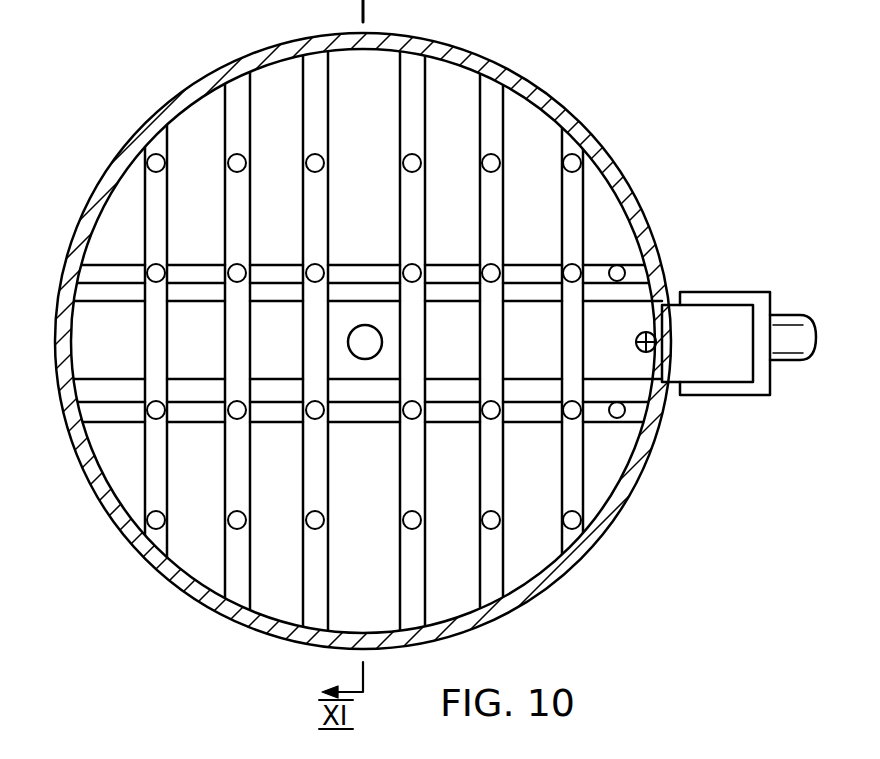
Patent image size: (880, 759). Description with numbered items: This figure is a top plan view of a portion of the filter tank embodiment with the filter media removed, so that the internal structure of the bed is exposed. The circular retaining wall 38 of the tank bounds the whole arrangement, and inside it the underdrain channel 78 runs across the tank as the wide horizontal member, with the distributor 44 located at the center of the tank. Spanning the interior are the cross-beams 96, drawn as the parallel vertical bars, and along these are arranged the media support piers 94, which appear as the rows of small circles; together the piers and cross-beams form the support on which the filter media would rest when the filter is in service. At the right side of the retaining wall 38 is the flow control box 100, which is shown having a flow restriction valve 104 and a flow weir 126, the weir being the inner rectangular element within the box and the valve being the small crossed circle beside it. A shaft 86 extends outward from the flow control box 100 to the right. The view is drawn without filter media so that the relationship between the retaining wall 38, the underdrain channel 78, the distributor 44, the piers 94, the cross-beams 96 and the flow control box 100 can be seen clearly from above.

The retaining wall 38 is at (186, 592).
The distributor 44 is at (360, 324).
The underdrain channel 78 is at (119, 343).
The shaft 86 is at (787, 315).
The media support piers 94 is at (578, 160).
The cross-beams 96 is at (497, 108).
The flow control box 100 is at (730, 308).
The flow restriction valve 104 is at (649, 352).
The flow weir 126 is at (672, 320).